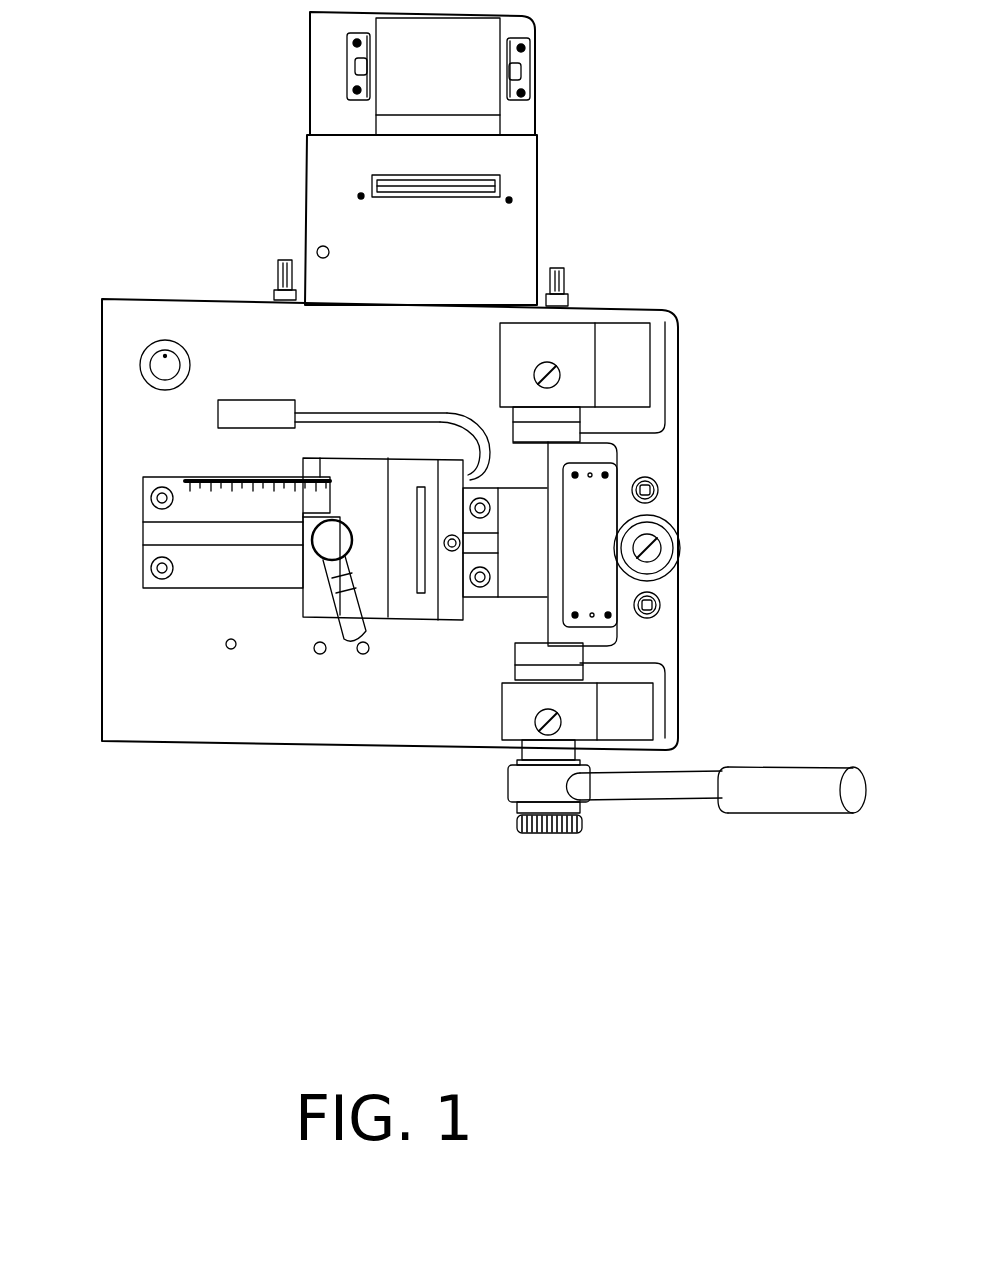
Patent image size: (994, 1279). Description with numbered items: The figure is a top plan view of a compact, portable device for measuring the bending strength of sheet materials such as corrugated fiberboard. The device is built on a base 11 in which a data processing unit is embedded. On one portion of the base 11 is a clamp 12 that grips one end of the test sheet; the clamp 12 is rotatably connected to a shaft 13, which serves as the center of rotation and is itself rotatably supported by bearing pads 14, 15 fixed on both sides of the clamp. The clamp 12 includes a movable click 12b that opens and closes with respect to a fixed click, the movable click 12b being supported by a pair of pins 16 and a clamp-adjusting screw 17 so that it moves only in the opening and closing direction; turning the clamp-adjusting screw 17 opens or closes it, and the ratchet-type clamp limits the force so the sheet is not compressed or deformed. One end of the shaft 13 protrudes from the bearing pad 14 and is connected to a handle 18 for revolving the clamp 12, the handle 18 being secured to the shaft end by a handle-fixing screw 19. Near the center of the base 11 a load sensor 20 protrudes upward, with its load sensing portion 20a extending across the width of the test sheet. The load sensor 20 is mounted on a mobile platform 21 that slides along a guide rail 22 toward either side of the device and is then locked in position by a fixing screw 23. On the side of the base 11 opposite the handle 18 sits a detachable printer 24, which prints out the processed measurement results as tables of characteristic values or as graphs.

The base 11 is at (680, 693).
The clamp 12 is at (640, 458).
The movable click 12b is at (350, 633).
The shaft 13 is at (525, 407).
The bearing pad 14 is at (623, 728).
The bearing pad 15 is at (618, 367).
The pins 16 is at (658, 488).
The clamp-adjusting screw 17 is at (680, 553).
The handle 18 is at (703, 795).
The handle-fixing screw 19 is at (550, 832).
The load sensor 20 is at (352, 489).
The load sensing portion 20a is at (418, 503).
The mobile platform 21 is at (302, 457).
The guide rail 22 is at (205, 573).
The fixing screw 23 is at (337, 547).
The printer 24 is at (537, 210).